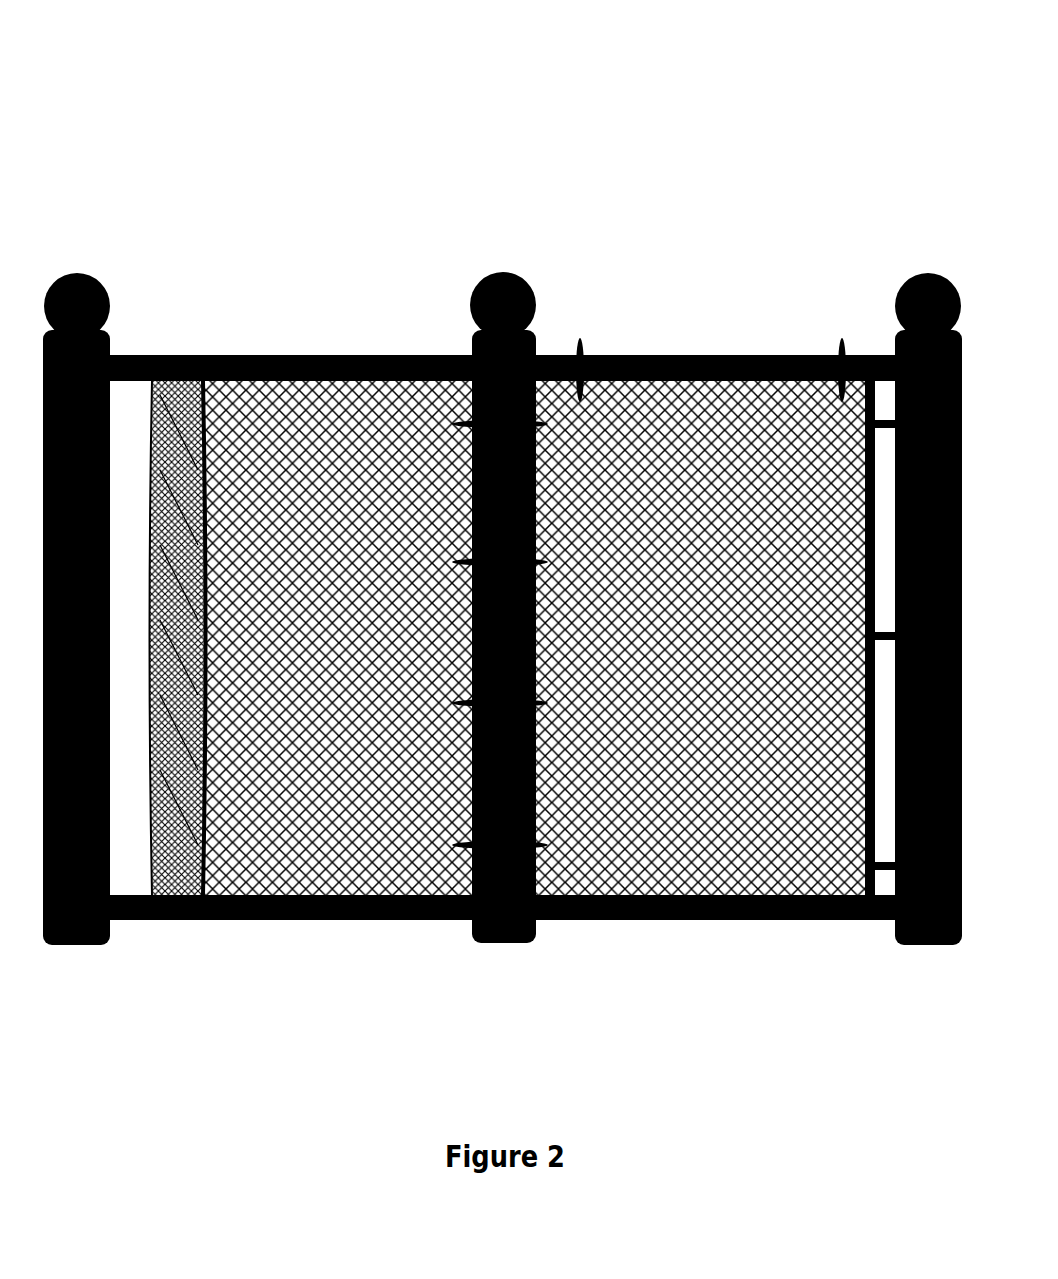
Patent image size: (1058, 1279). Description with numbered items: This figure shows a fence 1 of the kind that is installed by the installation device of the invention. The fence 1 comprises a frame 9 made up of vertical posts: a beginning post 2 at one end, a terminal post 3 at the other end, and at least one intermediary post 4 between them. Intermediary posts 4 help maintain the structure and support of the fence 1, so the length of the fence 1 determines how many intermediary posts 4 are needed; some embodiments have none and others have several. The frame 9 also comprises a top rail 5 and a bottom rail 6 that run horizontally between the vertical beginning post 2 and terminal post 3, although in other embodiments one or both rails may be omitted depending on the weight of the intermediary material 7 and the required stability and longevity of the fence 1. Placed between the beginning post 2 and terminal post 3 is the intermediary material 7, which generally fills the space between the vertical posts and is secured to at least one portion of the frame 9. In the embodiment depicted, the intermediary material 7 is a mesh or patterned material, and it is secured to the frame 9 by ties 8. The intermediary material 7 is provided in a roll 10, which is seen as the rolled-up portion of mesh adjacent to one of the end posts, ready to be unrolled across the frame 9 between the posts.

The fence 1 is at (320, 138).
The beginning post 2 is at (933, 262).
The terminal post 3 is at (77, 262).
The intermediary post 4 is at (508, 262).
The top rail 5 is at (727, 348).
The bottom rail 6 is at (728, 923).
The intermediary material 7 is at (323, 884).
The ties 8 is at (580, 328).
The frame 9 is at (317, 323).
The roll 10 is at (178, 886).